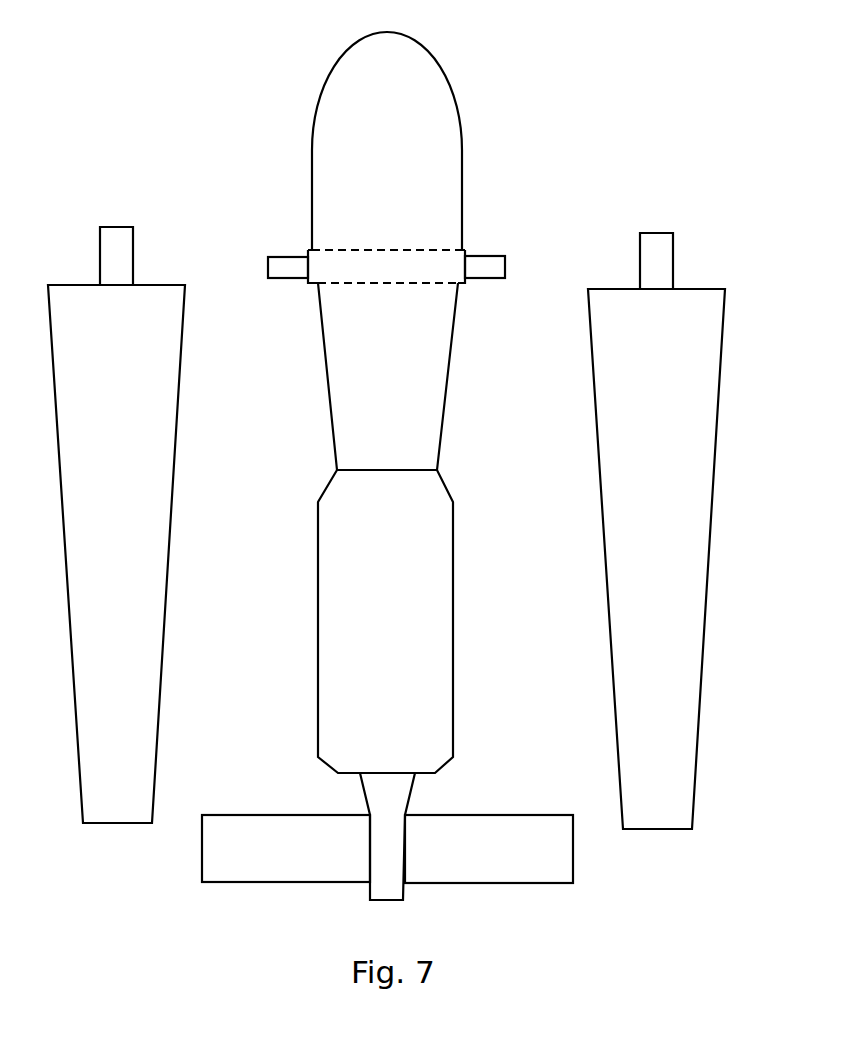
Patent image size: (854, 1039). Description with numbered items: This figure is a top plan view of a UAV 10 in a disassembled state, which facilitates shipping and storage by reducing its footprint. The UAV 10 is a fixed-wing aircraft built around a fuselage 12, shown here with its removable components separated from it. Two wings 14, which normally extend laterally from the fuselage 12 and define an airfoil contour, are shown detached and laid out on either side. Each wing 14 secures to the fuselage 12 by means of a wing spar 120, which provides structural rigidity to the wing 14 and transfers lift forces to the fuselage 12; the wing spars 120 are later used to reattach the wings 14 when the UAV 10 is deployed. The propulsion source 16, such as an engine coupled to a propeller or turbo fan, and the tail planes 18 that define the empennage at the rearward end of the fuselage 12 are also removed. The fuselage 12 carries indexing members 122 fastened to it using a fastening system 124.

The UAV 10 is at (158, 141).
The fuselage 12 is at (375, 232).
The wings 14 is at (119, 375).
The propulsion source 16 is at (373, 612).
The tail planes 18 is at (257, 847).
The wing spar 120 is at (118, 252).
The indexing members 122 is at (288, 268).
The fastening system 124 is at (450, 243).